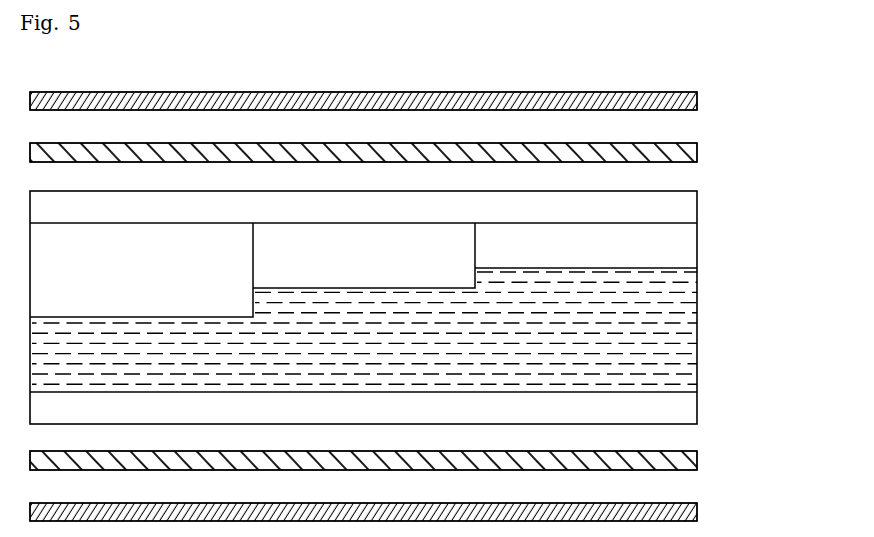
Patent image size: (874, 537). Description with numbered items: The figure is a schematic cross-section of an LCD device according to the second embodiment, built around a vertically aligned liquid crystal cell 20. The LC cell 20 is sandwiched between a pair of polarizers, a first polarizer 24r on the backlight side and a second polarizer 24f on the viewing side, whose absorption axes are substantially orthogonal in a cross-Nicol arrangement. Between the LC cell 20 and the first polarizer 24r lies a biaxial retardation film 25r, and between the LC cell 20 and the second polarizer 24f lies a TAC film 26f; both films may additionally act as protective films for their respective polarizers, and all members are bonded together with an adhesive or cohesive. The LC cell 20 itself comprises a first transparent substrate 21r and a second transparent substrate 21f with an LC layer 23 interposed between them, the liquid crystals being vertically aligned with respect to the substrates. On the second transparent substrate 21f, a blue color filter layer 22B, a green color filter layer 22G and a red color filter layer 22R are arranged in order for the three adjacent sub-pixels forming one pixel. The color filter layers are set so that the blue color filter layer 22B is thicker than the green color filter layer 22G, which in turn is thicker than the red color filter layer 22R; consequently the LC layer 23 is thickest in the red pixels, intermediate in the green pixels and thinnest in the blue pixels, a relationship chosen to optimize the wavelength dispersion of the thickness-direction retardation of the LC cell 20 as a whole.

The VA LC cell 20 is at (763, 191).
The second transparent substrate 21f is at (688, 208).
The first transparent substrate 21r is at (688, 409).
The blue color filter layer 22B is at (142, 238).
The green color filter layer 22G is at (358, 238).
The red color filter layer 22R is at (589, 238).
The LC layer 23 is at (688, 323).
The second polarizer 24f is at (686, 99).
The first polarizer 24r is at (686, 511).
The biaxial retardation film 25r is at (686, 460).
The TAC film 26f is at (686, 152).